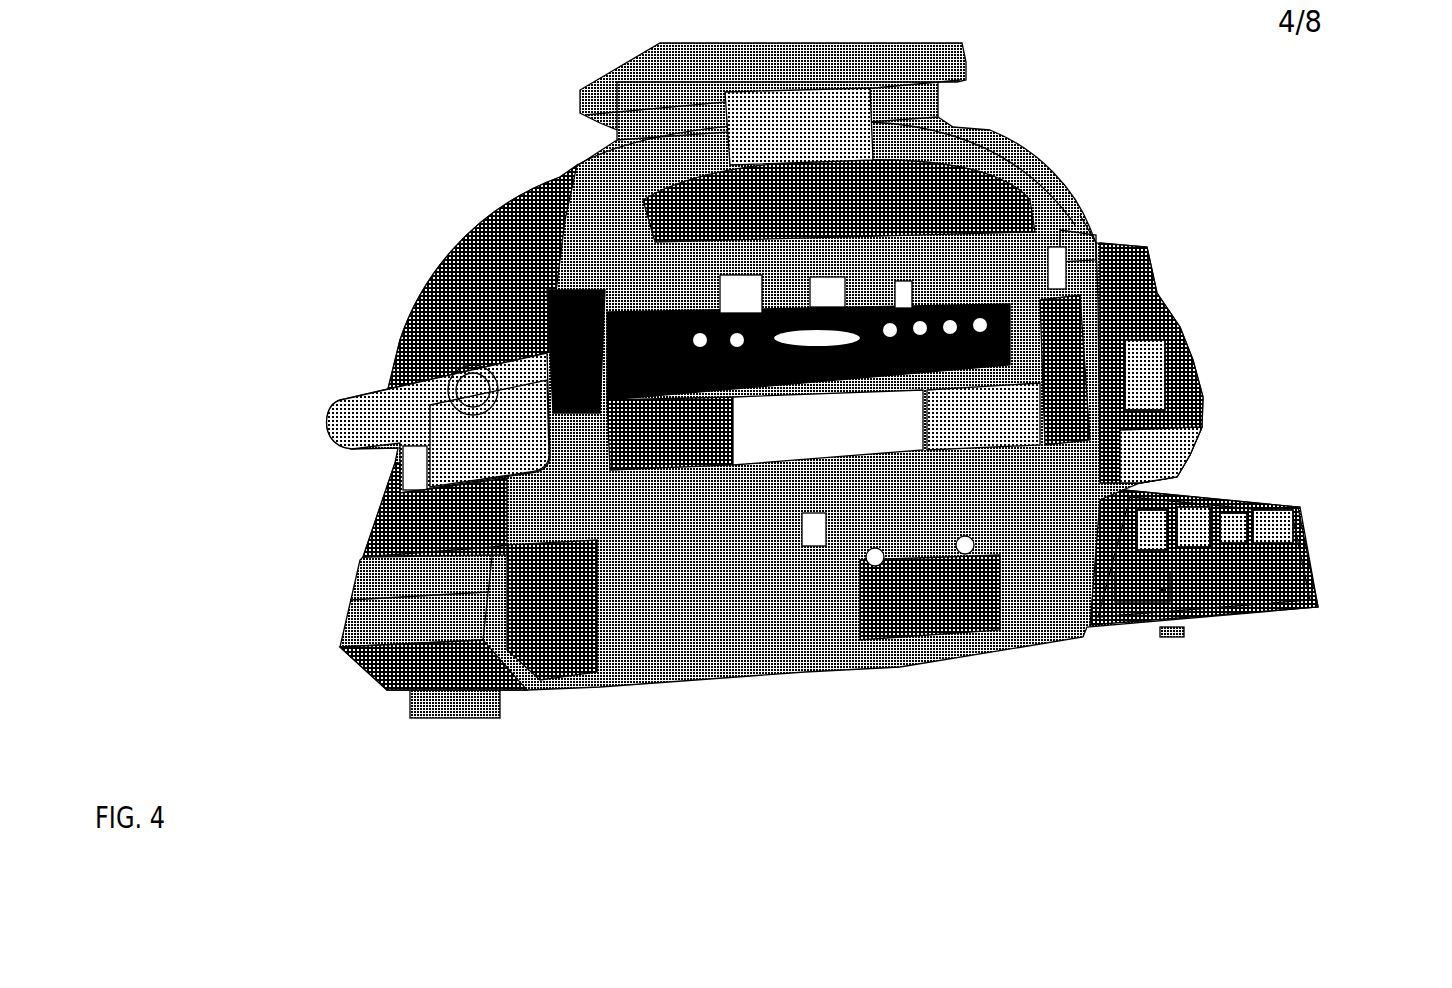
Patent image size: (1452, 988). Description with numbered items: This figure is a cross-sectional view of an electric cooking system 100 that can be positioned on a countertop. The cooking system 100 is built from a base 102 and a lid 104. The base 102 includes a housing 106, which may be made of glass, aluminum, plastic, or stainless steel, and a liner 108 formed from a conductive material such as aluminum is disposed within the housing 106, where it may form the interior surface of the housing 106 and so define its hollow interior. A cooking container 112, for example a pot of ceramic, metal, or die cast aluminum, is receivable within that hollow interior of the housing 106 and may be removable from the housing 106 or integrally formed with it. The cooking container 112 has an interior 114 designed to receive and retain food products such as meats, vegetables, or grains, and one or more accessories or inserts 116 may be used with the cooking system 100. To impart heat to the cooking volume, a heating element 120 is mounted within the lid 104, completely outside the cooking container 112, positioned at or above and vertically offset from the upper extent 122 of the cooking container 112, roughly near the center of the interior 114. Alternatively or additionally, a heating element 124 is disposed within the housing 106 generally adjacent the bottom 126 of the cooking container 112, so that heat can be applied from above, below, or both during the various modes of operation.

The cooking system 100 is at (300, 146).
The base 102 is at (1325, 528).
The lid 104 is at (1108, 201).
The housing 106 is at (390, 617).
The liner 108 is at (1120, 578).
The cooking container 112 is at (535, 506).
The interior 114 is at (350, 587).
The inserts 116 is at (1197, 410).
The heating element 120 is at (1173, 289).
The upper extent 122 is at (400, 350).
The heating element 124 is at (917, 557).
The bottom 126 is at (1097, 237).